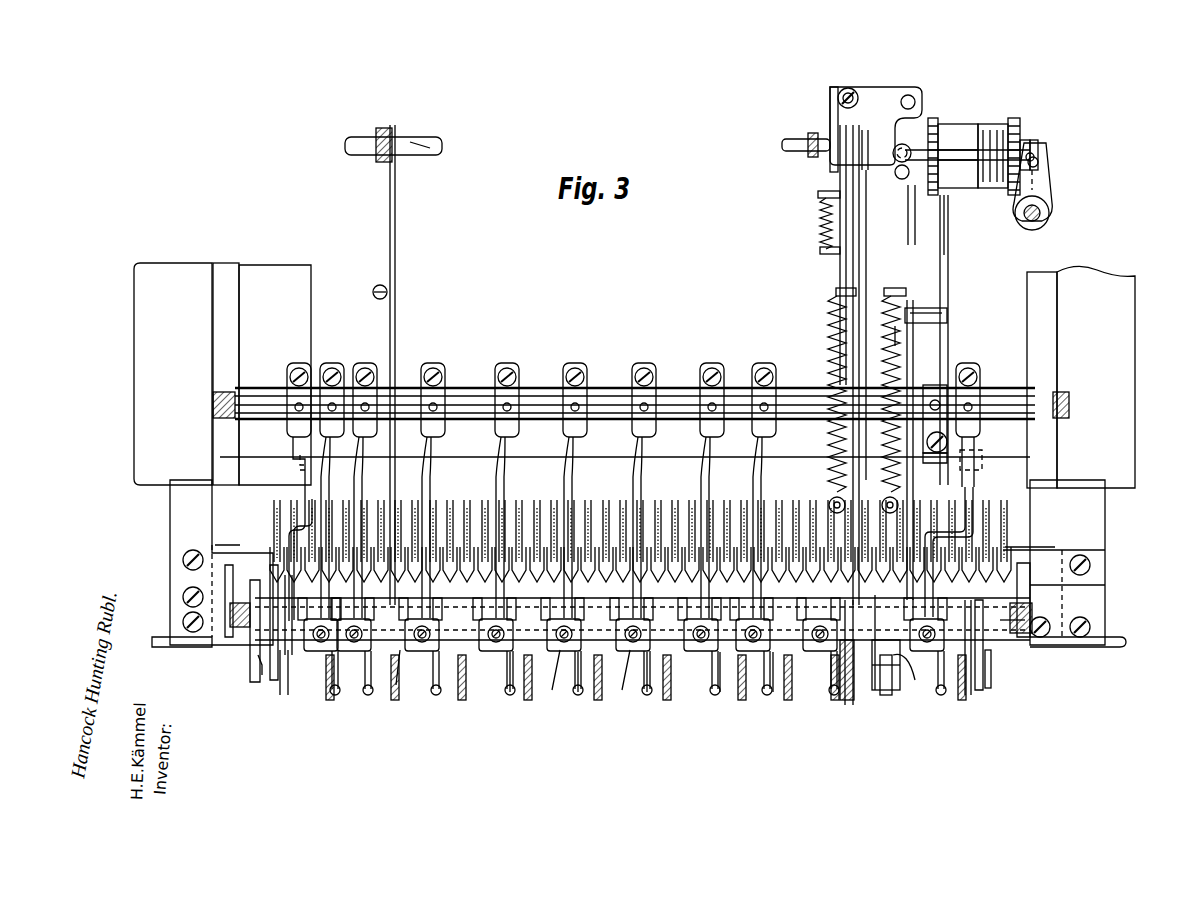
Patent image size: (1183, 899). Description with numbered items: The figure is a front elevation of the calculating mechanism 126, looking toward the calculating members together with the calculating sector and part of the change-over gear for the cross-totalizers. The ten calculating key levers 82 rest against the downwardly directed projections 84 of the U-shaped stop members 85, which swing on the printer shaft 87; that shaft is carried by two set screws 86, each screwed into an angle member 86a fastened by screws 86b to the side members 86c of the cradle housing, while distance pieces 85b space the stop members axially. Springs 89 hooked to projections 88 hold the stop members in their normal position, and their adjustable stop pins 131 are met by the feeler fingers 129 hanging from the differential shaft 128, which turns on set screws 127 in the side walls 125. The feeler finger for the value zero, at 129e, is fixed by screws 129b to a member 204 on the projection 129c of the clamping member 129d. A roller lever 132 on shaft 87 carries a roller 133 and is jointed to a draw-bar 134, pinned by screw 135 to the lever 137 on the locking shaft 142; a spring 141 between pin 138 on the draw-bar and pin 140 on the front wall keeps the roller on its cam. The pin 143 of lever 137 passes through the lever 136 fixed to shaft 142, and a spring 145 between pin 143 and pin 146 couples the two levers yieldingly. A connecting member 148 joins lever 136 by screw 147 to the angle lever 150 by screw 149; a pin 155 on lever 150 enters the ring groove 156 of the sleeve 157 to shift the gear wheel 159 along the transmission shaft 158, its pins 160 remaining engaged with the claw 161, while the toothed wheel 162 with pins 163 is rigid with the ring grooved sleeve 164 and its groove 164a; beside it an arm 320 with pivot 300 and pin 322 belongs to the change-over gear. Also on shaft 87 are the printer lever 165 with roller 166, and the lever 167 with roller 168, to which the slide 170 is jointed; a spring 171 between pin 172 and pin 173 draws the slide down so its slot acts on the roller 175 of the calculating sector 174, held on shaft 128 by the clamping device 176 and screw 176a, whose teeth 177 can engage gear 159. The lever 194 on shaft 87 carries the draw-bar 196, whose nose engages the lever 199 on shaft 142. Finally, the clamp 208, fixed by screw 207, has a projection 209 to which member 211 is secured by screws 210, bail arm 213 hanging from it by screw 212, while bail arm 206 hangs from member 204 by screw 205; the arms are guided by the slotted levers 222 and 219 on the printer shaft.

The calculating key levers 82 is at (395, 685).
The downwardly directed projections 84 is at (305, 650).
The U-shaped stop members 85 is at (322, 648).
The distance pieces 85b is at (540, 594).
The set screws 86 is at (774, 650).
The frame plate 86a is at (212, 587).
The screws 86b is at (183, 623).
The side members of the cradle housing 86c is at (185, 518).
The printer shaft 87 is at (464, 633).
The projections 88 is at (415, 683).
The springs 89 is at (285, 695).
The side walls 125 is at (228, 280).
The calculating mechanism 126 is at (293, 290).
The set screws 127 is at (235, 402).
The differential shaft 128 is at (467, 400).
The feeler fingers 129 is at (350, 445).
The screws 129b is at (980, 456).
The projection 129c is at (965, 485).
The clamping member 129d is at (970, 393).
The contact spring tab 129e is at (970, 364).
The stop pins 131 is at (565, 650).
The roller lever 132 is at (846, 670).
The roller 133 is at (857, 670).
The draw-bar 134 is at (858, 250).
The screw 135 is at (867, 163).
The lever 136 is at (840, 182).
The lever 137 is at (857, 187).
The pin 138 is at (836, 290).
The pin 140 is at (830, 503).
The spring 141 is at (826, 332).
The locking shaft 142 is at (412, 145).
The pin 143 is at (818, 195).
The spring 145 is at (818, 222).
The pin 146 is at (820, 250).
The screw 147 is at (807, 150).
The connecting member 148 is at (830, 120).
The screw 149 is at (840, 90).
The angle lever 150 is at (875, 96).
The pin 155 is at (916, 190).
The ring groove 156 is at (900, 178).
The sleeve 157 is at (897, 143).
The transmission shaft 158 is at (980, 186).
The gear wheel 159 is at (932, 118).
The pins 160 is at (952, 150).
The claw 161 is at (1020, 169).
The toothed wheel 162 is at (1013, 118).
The pins 163 is at (1005, 140).
The ring grooved sleeve 164 is at (1034, 140).
The pin 164a is at (1030, 152).
The printer lever 165 is at (880, 675).
The roller 166 is at (880, 690).
The lever 167 is at (895, 683).
The roller 168 is at (910, 675).
The slide 170 is at (910, 355).
The spring 171 is at (898, 345).
The pin 172 is at (885, 292).
The pin 173 is at (887, 500).
The calculating sector 174 is at (948, 250).
The roller 175 is at (947, 310).
The clamping device 176 is at (933, 454).
The screw 176a is at (947, 438).
The teeth 177 is at (948, 210).
The lever 194 is at (398, 652).
The draw-bar 196 is at (395, 300).
The lever 199 is at (395, 204).
The member 204 is at (990, 522).
The screw 205 is at (990, 664).
The bail arm 206 is at (967, 668).
The screw 207 is at (300, 364).
The clamp 208 is at (297, 432).
The projection 209 is at (341, 402).
The screws 210 is at (300, 478).
The member 211 is at (283, 515).
The screw 212 is at (257, 653).
The bail arm 213 is at (275, 689).
The lever 219 is at (985, 658).
The lever 222 is at (255, 687).
The pivot 300 is at (1040, 210).
The arm 320 is at (1038, 180).
The pin 322 is at (1036, 160).